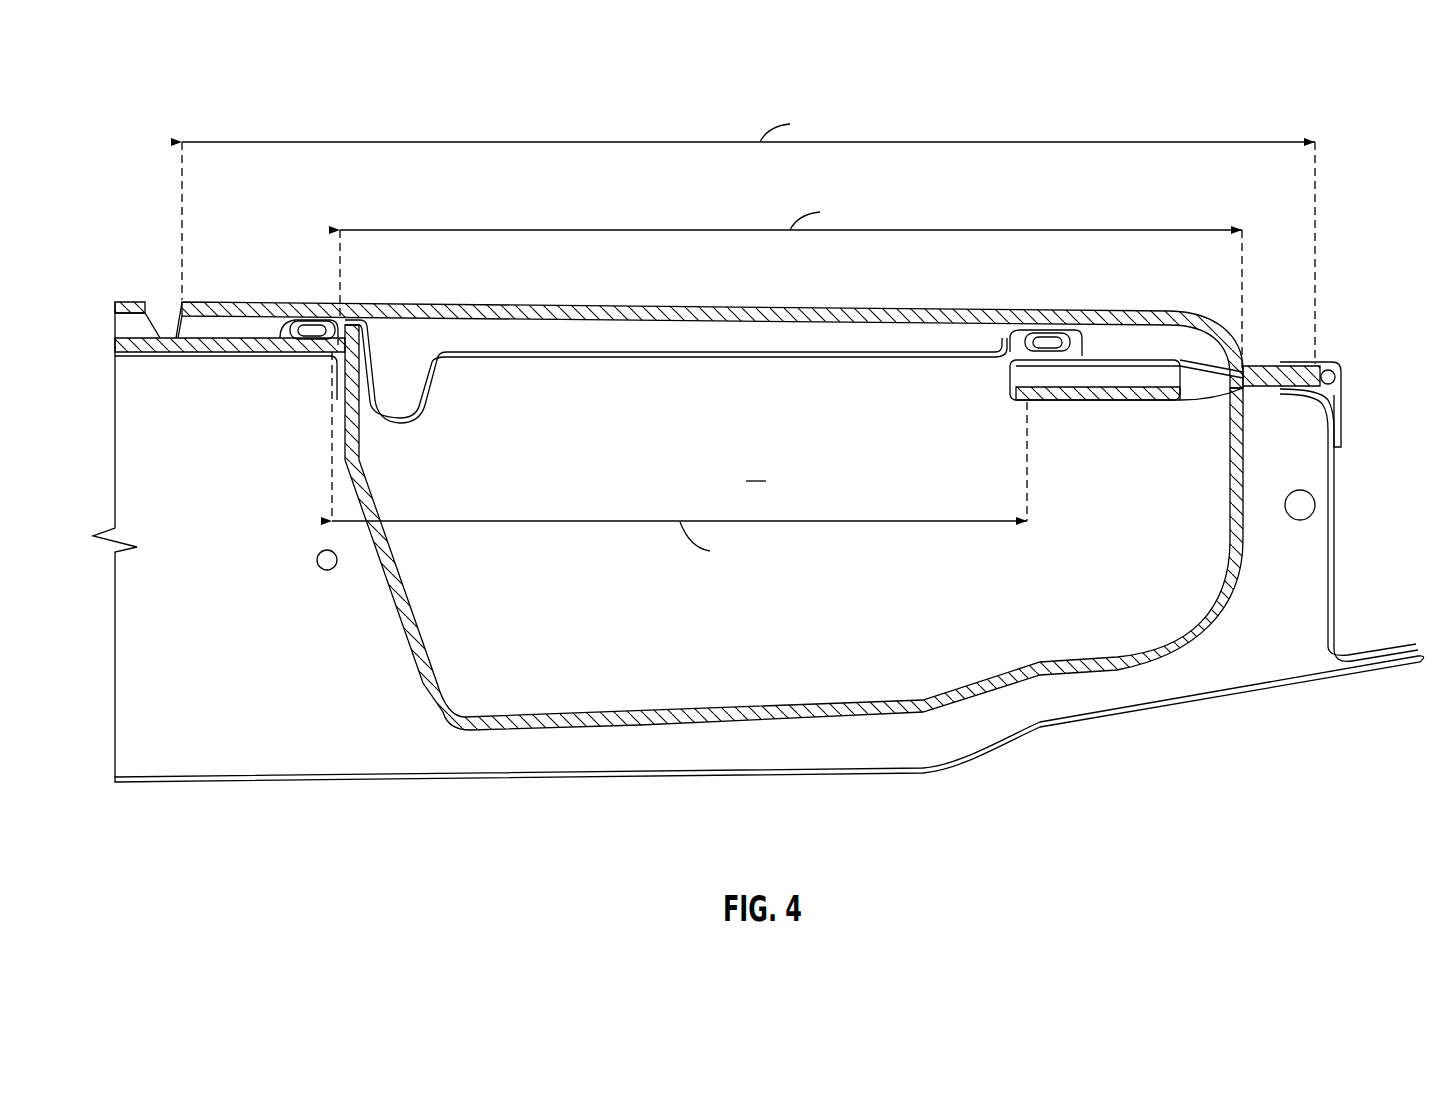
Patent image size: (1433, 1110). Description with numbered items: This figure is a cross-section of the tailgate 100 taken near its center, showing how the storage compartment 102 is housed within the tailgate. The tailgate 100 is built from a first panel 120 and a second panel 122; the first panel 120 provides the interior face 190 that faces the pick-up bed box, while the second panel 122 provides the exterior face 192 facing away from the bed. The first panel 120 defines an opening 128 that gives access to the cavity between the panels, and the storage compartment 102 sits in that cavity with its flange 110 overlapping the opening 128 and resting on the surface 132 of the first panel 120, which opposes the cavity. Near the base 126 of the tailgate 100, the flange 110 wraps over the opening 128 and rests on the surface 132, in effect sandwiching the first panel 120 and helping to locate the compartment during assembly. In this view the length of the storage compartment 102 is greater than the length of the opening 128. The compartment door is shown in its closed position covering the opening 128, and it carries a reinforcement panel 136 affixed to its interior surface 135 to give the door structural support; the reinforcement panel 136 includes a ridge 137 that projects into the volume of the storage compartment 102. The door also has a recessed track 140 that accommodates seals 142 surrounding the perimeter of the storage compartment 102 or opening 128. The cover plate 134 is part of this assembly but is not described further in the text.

The tailgate 100 is at (152, 208).
The storage compartment 102 is at (745, 716).
The flange 110 is at (180, 336).
The first panel 120 is at (164, 358).
The second panel 122 is at (236, 784).
The base 126 is at (296, 356).
The opening 128 is at (305, 320).
The surface 132 is at (1180, 392).
The cover plate 134 is at (513, 303).
The interior surface 135 is at (745, 358).
The reinforcement panel 136 is at (612, 350).
The ridge 137 is at (428, 415).
The recessed track 140 is at (1082, 332).
The seals 142 is at (1046, 340).
The interior face 190 is at (420, 302).
The exterior face 192 is at (490, 786).